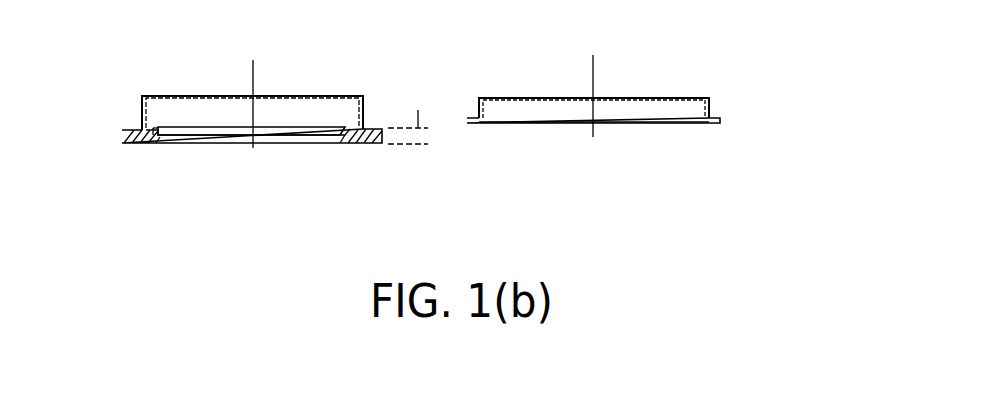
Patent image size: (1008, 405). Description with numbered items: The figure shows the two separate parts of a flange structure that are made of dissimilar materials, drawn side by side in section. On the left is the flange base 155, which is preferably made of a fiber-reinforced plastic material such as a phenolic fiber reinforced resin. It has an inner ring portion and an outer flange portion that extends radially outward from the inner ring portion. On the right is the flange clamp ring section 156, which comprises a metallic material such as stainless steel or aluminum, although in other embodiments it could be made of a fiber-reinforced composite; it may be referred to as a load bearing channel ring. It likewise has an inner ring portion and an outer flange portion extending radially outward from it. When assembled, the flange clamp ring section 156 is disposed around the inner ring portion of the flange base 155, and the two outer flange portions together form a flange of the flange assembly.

The flange base 155 is at (216, 130).
The flange clamp ring section 156 is at (656, 146).